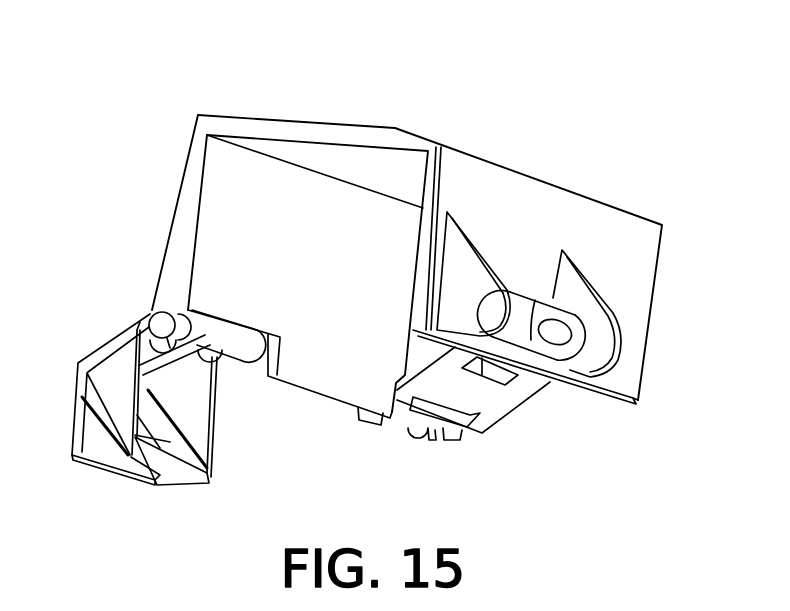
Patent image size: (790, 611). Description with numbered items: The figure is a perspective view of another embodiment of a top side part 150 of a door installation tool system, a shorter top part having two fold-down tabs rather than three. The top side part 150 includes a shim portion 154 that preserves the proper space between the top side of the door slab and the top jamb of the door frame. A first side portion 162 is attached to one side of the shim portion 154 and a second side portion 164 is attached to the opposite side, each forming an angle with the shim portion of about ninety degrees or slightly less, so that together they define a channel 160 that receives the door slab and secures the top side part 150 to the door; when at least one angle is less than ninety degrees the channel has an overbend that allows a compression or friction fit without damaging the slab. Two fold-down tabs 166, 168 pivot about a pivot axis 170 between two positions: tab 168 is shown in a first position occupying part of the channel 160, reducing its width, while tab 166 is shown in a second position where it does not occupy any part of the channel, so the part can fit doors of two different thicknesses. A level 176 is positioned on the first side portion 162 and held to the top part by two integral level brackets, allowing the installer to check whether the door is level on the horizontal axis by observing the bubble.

The top side part 150 is at (521, 78).
The shim portion 154 is at (348, 125).
The channel 160 is at (323, 370).
The first side portion 162 is at (642, 268).
The second side portion 164 is at (180, 227).
The fold-down tab 166 is at (92, 433).
The fold-down tab 168 is at (500, 405).
The pivot axis 170 is at (162, 312).
The level 176 is at (585, 350).